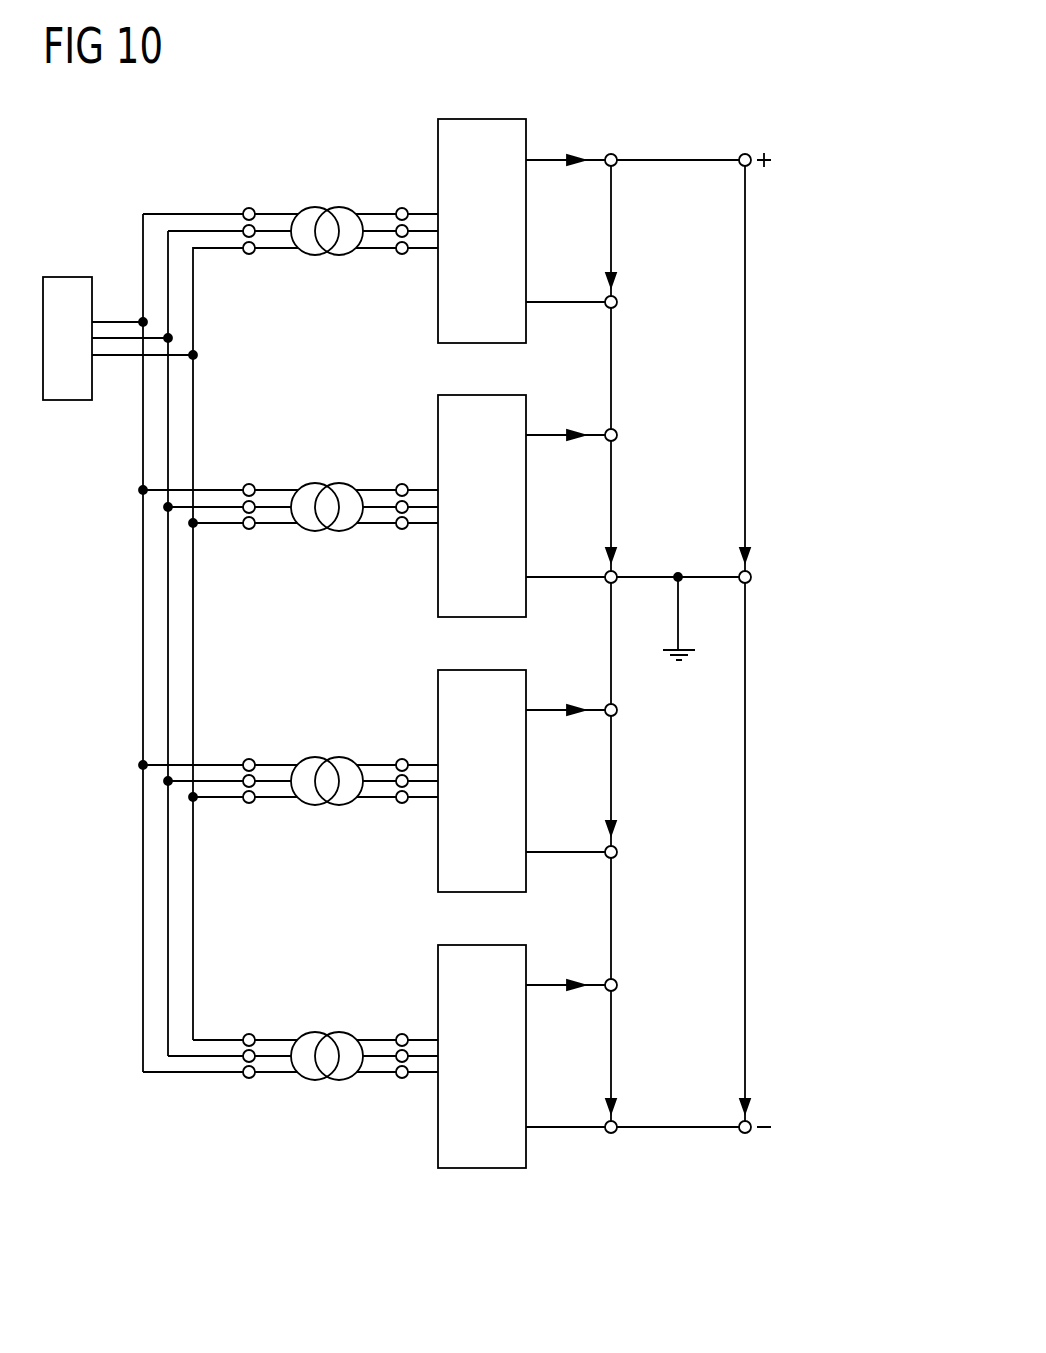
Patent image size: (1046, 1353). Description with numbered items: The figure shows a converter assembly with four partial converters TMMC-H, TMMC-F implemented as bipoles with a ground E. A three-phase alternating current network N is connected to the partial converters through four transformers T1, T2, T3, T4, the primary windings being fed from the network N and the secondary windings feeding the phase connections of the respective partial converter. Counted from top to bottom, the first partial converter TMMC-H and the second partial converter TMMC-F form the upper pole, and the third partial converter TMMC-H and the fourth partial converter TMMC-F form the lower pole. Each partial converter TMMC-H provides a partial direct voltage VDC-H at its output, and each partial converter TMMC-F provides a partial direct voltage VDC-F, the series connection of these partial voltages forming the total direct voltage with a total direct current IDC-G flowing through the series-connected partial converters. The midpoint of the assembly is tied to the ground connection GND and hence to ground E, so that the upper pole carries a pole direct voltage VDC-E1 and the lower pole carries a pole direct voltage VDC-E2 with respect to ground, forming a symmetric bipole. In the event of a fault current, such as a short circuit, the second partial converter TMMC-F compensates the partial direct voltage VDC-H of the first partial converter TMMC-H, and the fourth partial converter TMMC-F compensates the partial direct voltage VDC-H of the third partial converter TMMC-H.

The three-phase alternating current network N is at (68, 277).
The transformer T1 is at (316, 207).
The transformer T2 is at (316, 483).
The transformer T3 is at (316, 757).
The transformer T4 is at (316, 1032).
The partial converter TMMC-H is at (482, 119).
The partial converter TMMC-F is at (481, 395).
The total direct current IDC-G is at (572, 156).
The partial direct voltage VDC-H is at (611, 226).
The partial direct voltage VDC-F is at (611, 473).
The pole direct voltage VDC-E1 is at (745, 288).
The pole direct voltage VDC-E2 is at (745, 843).
The ground connection GND is at (752, 576).
The ground E is at (679, 665).